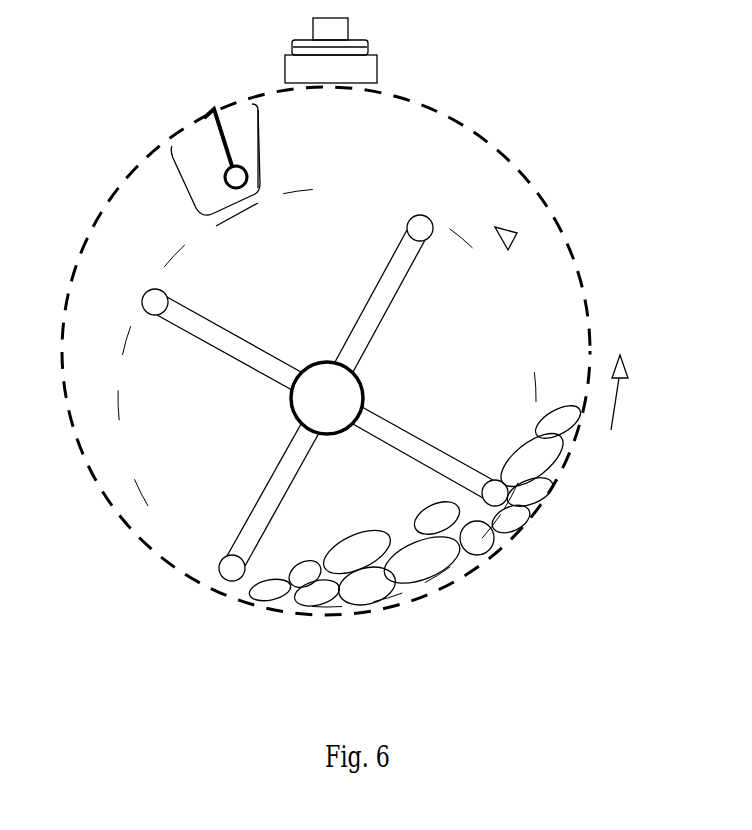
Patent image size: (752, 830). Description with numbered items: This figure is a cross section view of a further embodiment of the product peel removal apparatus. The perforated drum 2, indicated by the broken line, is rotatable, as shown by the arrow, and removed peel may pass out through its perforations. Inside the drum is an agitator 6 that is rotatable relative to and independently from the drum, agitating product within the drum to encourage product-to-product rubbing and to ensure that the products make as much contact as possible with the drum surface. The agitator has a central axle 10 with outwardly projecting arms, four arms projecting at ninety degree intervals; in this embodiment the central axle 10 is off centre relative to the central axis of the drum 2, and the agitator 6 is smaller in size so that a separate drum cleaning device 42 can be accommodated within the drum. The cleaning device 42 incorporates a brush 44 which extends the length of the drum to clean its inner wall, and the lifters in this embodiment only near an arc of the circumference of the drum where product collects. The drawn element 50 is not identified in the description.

The perforated drum 2 is at (487, 563).
The agitator 6 is at (388, 416).
The central axle 10 is at (327, 398).
The drum cleaning device 42 is at (202, 167).
The brush 44 is at (219, 112).
The bracket side wall 50 is at (260, 147).